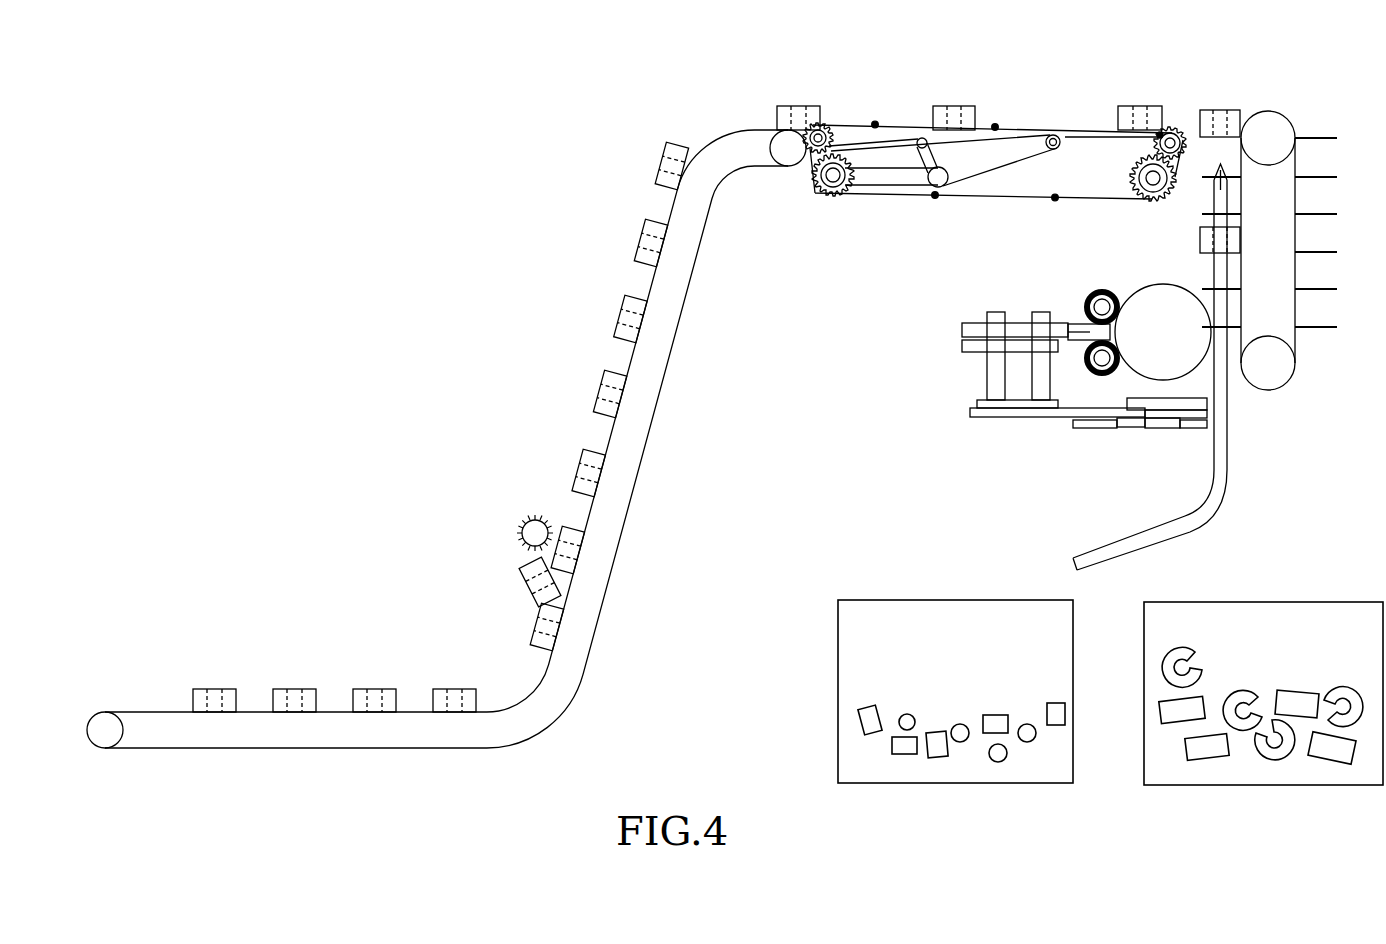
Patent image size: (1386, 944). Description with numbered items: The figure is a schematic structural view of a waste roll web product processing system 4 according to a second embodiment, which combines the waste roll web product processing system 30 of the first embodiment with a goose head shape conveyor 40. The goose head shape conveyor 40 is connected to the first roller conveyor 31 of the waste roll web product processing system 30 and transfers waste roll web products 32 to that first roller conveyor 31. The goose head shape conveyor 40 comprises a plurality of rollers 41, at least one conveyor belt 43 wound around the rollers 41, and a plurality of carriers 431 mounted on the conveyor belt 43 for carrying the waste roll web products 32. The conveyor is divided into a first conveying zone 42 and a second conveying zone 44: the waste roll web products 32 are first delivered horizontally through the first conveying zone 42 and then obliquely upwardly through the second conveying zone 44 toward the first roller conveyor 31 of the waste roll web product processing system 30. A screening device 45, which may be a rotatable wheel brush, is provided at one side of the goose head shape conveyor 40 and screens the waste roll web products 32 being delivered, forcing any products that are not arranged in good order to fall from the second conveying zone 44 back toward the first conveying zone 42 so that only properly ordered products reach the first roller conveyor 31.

The waste roll web product processing system 4 is at (220, 141).
The waste roll web product processing system 30 is at (1173, 90).
The first roller conveyor 31 is at (847, 128).
The waste roll web products 32 is at (360, 688).
The goose head shape conveyor 40 is at (360, 420).
The rollers 41 is at (106, 745).
The first conveying zone 42 is at (264, 674).
The conveyor belt 43 is at (312, 750).
The carriers 431 is at (531, 647).
The second conveying zone 44 is at (585, 318).
The screening device 45 is at (528, 521).